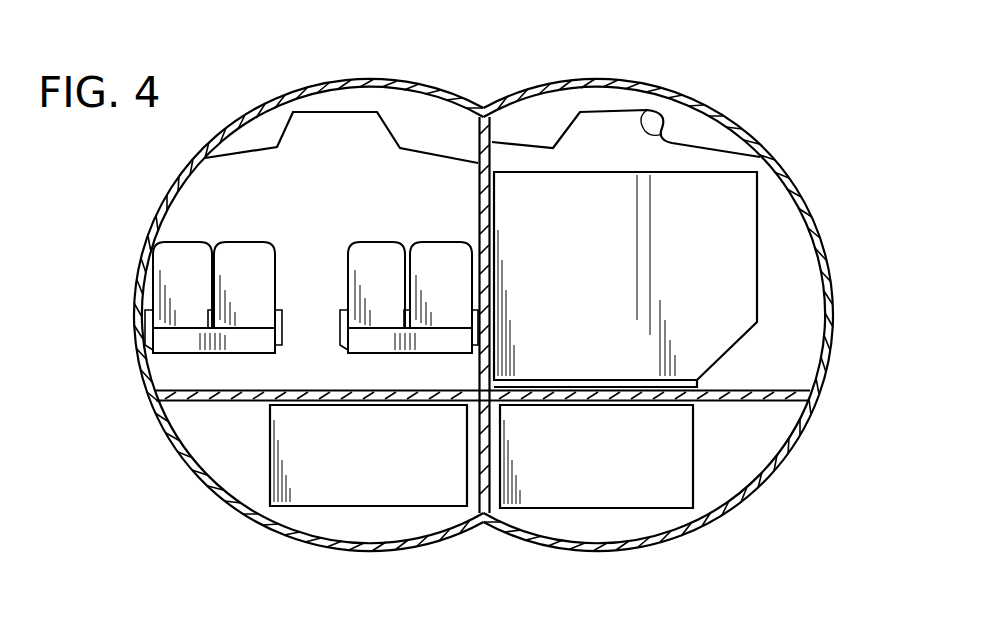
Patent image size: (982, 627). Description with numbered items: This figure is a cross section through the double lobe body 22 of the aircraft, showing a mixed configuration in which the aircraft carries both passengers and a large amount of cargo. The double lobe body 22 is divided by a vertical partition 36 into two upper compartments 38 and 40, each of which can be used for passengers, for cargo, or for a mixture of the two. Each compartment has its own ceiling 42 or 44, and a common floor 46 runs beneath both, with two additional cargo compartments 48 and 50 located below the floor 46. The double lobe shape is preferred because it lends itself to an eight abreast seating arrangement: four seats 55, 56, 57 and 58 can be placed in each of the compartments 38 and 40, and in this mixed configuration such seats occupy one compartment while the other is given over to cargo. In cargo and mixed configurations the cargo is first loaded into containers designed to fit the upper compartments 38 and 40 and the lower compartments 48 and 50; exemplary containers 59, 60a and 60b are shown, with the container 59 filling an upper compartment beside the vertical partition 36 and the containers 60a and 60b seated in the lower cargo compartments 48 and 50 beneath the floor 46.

The double lobe body 22 is at (480, 287).
The vertical partition 36 is at (492, 140).
The compartment 38 is at (782, 222).
The compartment 40 is at (206, 172).
The ceiling 42 is at (668, 134).
The ceiling 44 is at (347, 112).
The floor 46 is at (766, 392).
The cargo compartment 48 is at (790, 462).
The cargo compartment 50 is at (188, 423).
The seat 55 is at (427, 243).
The seat 56 is at (373, 243).
The seat 57 is at (255, 243).
The seat 58 is at (200, 243).
The container 59 is at (621, 282).
The container 60a is at (621, 462).
The container 60b is at (396, 462).